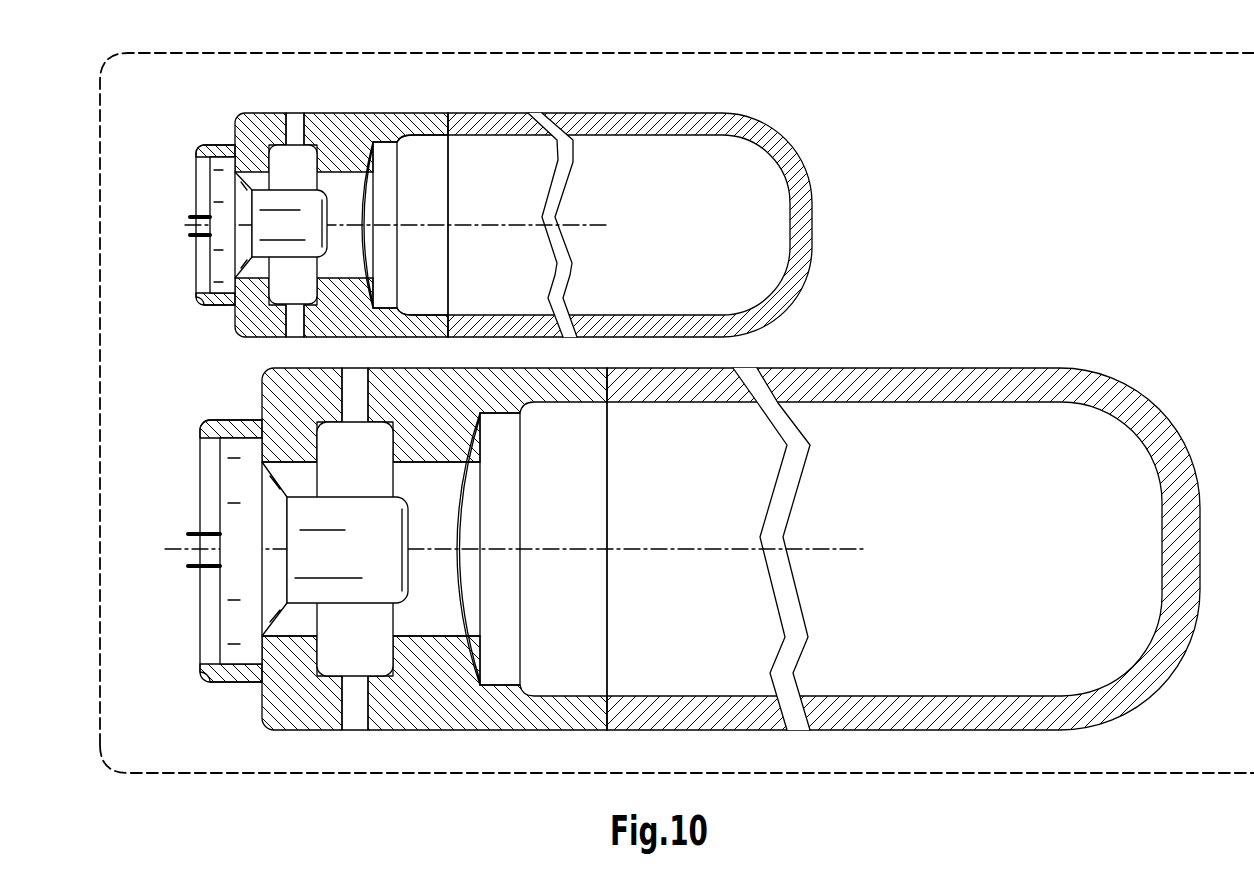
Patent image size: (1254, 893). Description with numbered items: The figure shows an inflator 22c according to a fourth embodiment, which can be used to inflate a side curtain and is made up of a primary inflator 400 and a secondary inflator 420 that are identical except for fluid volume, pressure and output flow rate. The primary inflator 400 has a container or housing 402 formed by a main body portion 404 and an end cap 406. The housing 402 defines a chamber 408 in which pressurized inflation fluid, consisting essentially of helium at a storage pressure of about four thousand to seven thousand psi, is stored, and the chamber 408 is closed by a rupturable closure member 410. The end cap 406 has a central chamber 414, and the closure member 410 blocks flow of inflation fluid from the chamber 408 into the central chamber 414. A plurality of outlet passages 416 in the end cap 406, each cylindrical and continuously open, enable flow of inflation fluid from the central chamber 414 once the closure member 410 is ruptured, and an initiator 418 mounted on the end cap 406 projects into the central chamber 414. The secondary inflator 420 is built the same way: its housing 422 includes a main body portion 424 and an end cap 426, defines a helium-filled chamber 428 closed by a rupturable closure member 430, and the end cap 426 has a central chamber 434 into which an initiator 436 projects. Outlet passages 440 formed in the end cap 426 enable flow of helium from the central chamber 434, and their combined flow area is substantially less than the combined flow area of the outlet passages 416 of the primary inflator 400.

The inflator 22c is at (762, 41).
The primary inflator 400 is at (661, 523).
The housing 402 is at (682, 502).
The main body portion 404 is at (888, 382).
The end cap 406 is at (461, 699).
The chamber 408 is at (946, 483).
The closure member 410 is at (463, 582).
The central chamber 414 is at (430, 611).
The outlet passages 416 is at (347, 399).
The initiator 418 is at (216, 596).
The secondary inflator 420 is at (532, 215).
The housing 422 is at (528, 202).
The main body portion 424 is at (673, 121).
The end cap 426 is at (411, 129).
The chamber 428 is at (671, 199).
The closure member 430 is at (367, 208).
The central chamber 434 is at (347, 188).
The initiator 436 is at (204, 258).
The outlet passages 440 is at (293, 124).